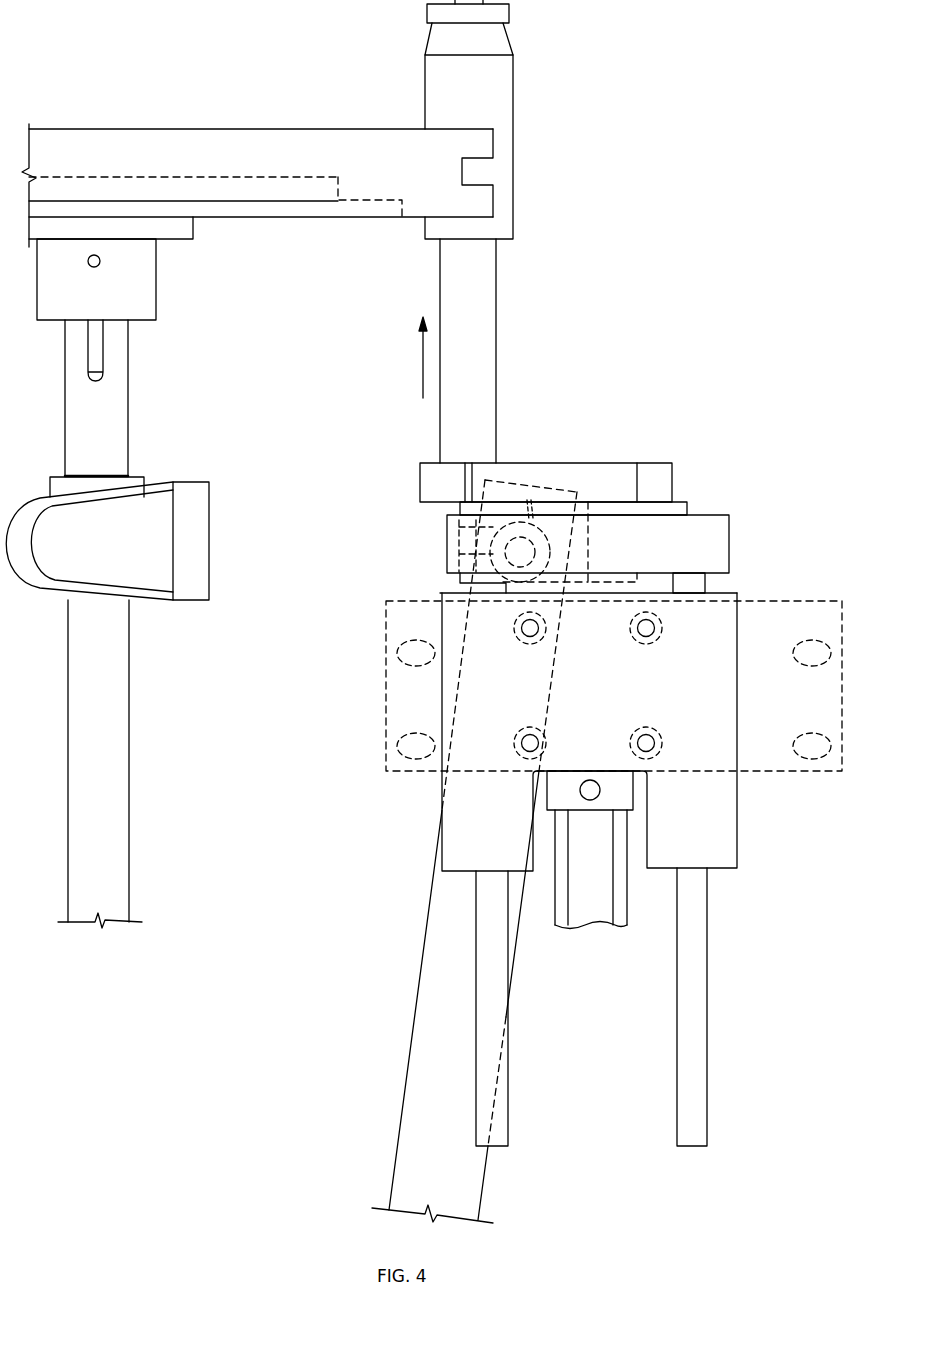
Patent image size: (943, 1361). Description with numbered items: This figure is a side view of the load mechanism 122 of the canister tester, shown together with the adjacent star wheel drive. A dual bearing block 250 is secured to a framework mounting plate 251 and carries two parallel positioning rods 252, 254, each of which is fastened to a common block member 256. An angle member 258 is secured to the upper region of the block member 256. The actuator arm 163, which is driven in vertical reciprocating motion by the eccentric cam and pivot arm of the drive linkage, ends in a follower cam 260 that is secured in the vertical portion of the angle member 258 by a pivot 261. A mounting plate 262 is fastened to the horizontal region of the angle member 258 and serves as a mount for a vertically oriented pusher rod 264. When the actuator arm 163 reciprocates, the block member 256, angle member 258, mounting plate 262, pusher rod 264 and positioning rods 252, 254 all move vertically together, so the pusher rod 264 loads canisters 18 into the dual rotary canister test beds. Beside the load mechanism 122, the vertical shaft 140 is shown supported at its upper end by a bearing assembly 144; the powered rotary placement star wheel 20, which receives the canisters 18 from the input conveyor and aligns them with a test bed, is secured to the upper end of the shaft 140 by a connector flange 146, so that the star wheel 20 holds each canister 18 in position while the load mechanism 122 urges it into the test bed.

The canister 18 is at (502, 97).
The rotary placement star wheel 20 is at (253, 141).
The load mechanism 122 is at (747, 419).
The vertical shaft 140 is at (118, 697).
The bearing assembly 144 is at (120, 556).
The connector flange 146 is at (150, 306).
The actuator arm 163 is at (425, 952).
The dual bearing block 250 is at (738, 848).
The framework mounting plate 251 is at (765, 597).
The positioning rod 252 is at (510, 1126).
The positioning rod 254 is at (675, 1135).
The block member 256 is at (722, 552).
The angle member 258 is at (682, 507).
The follower cam 260 is at (447, 520).
The pivot 261 is at (447, 551).
The mounting plate 262 is at (650, 468).
The pusher rod 264 is at (483, 322).